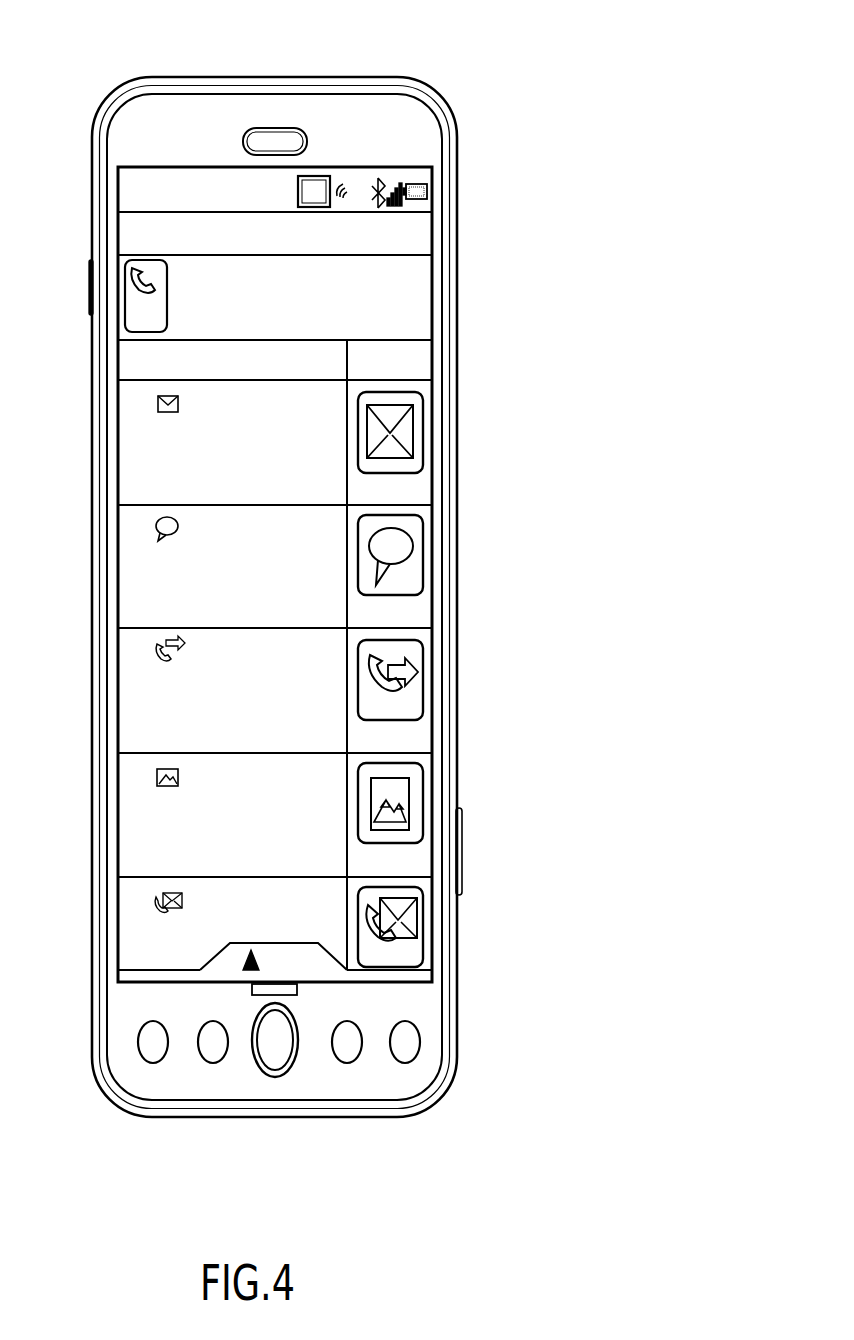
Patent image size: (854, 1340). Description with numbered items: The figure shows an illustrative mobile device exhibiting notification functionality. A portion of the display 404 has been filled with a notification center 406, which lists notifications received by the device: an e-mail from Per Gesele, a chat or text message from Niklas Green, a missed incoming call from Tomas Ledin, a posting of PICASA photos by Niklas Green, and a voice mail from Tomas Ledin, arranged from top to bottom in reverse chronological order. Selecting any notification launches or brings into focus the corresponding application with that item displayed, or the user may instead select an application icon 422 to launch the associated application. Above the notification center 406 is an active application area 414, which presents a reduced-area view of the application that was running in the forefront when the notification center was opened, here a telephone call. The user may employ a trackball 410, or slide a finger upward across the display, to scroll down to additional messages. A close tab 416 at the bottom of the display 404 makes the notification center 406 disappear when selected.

The display 404 is at (172, 118).
The active application area 414 is at (130, 262).
The notification center 406 is at (85, 358).
The application icon 422 is at (433, 433).
The trackball 410 is at (272, 1077).
The close tab 416 is at (302, 972).